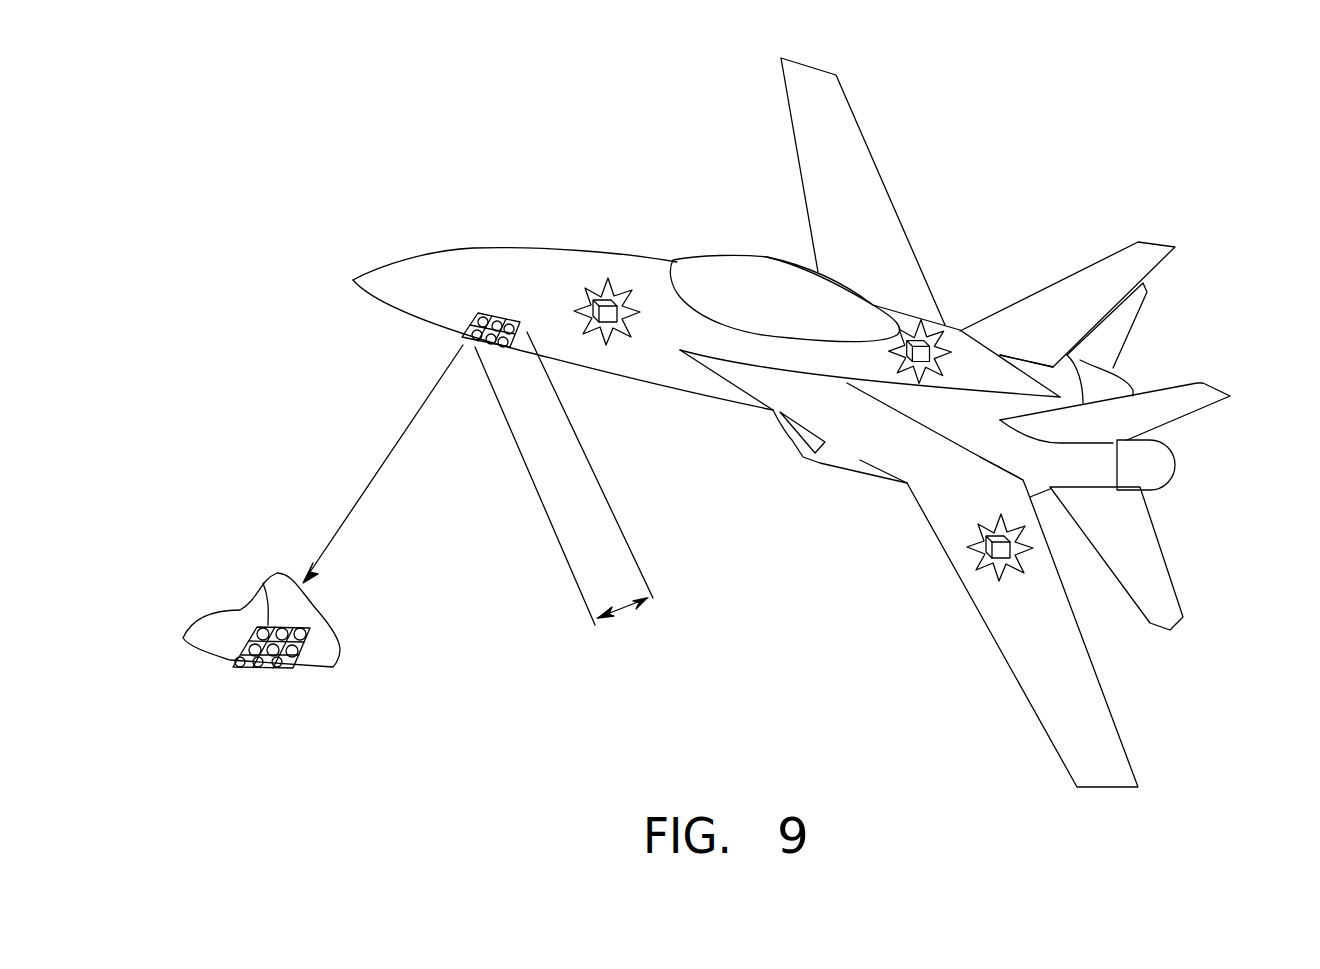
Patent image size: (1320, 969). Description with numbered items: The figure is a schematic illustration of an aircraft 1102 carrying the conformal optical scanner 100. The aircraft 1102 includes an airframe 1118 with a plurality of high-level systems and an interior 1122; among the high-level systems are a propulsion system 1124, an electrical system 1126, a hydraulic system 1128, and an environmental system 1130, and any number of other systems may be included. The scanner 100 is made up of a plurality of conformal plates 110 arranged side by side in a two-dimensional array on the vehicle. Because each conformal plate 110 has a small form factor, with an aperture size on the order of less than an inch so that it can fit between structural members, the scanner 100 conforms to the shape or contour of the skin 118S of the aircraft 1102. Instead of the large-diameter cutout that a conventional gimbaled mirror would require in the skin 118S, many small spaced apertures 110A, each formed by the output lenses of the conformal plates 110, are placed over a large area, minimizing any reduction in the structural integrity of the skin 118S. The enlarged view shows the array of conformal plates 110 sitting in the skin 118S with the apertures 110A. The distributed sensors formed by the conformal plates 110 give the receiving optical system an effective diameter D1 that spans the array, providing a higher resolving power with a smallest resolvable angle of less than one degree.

The aircraft 1102 is at (810, 422).
The airframe 1118 is at (495, 245).
The interior 1122 is at (747, 273).
The propulsion system 1124 is at (1145, 465).
The electrical system 1126 is at (613, 317).
The hydraulic system 1128 is at (993, 555).
The environmental system 1130 is at (925, 353).
The scanner 100 is at (492, 320).
The conformal plate 110 is at (463, 337).
The aperture 110A is at (263, 583).
The skin 118S is at (305, 610).
The effective diameter D1 is at (622, 607).